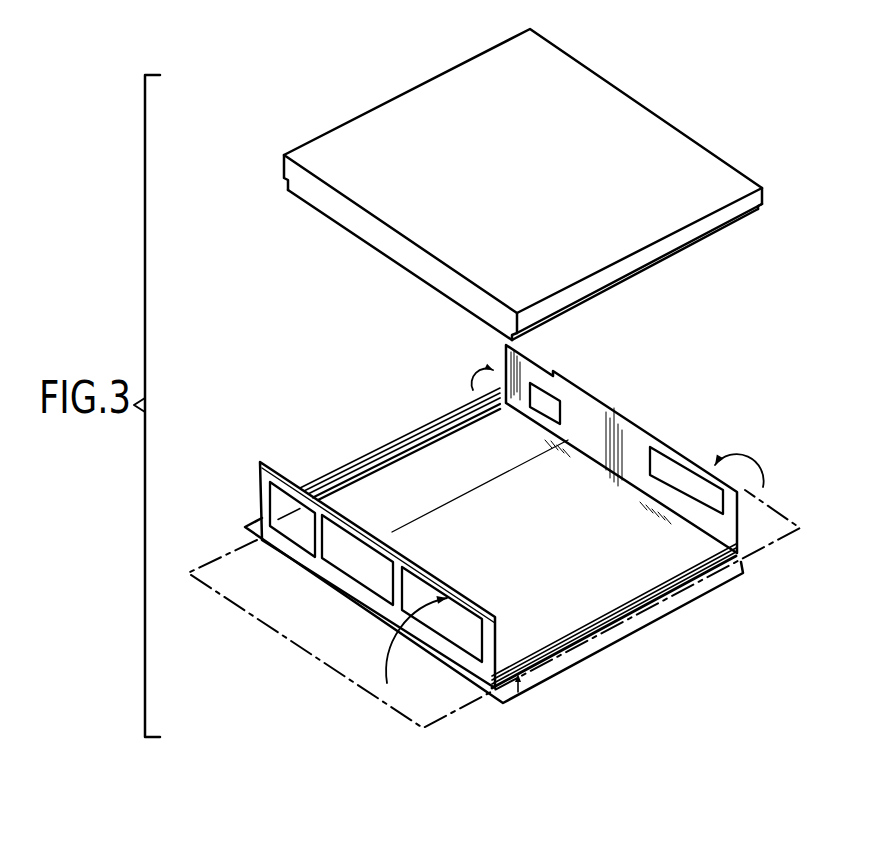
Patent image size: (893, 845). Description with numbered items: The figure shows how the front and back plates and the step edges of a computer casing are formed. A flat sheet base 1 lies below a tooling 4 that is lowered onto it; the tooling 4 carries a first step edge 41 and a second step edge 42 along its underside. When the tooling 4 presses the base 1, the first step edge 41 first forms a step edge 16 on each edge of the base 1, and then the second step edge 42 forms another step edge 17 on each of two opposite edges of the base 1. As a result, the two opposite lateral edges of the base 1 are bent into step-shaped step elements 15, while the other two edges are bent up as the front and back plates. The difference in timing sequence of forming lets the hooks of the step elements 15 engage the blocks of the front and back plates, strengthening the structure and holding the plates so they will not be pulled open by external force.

The base 1 is at (573, 473).
The tooling 4 is at (613, 83).
The first step edge 41 is at (390, 263).
The second step edge 42 is at (680, 248).
The step element 15 is at (363, 462).
The step edge 16 is at (410, 457).
The step edge 17 is at (432, 435).